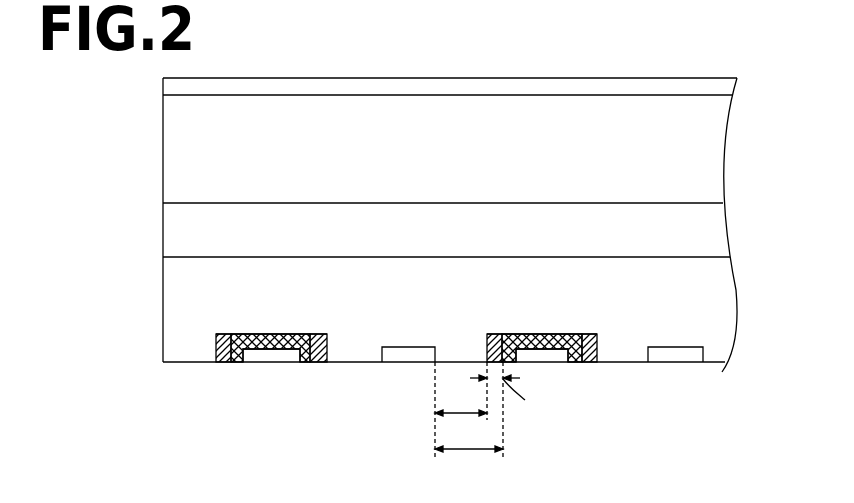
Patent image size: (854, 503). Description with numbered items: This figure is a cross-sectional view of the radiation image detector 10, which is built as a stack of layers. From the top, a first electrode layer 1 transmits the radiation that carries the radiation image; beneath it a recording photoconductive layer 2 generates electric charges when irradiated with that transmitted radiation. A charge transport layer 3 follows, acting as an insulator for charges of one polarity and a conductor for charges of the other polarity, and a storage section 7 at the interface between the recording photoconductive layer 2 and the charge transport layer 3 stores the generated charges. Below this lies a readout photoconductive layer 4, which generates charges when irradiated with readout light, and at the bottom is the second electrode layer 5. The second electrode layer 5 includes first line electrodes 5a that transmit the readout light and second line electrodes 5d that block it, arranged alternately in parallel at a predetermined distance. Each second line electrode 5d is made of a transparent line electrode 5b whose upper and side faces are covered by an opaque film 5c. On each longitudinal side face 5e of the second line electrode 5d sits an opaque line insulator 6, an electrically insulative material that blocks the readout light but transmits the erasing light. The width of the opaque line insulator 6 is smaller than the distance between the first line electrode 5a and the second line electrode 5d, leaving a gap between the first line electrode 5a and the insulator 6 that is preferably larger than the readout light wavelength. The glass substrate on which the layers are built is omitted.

The first electrode layer 1 is at (173, 87).
The recording photoconductive layer 2 is at (173, 135).
The charge transport layer 3 is at (173, 229).
The readout photoconductive layer 4 is at (173, 277).
The second electrode layer 5 is at (370, 458).
The first line electrode 5a is at (392, 363).
The transparent line electrode 5b is at (278, 355).
The opaque film 5c is at (238, 363).
The second line electrode 5d is at (213, 418).
The side face 5e is at (226, 334).
The opaque line insulator 6 is at (328, 341).
The storage section 7 is at (196, 204).
The radiation image detector 10 is at (724, 56).